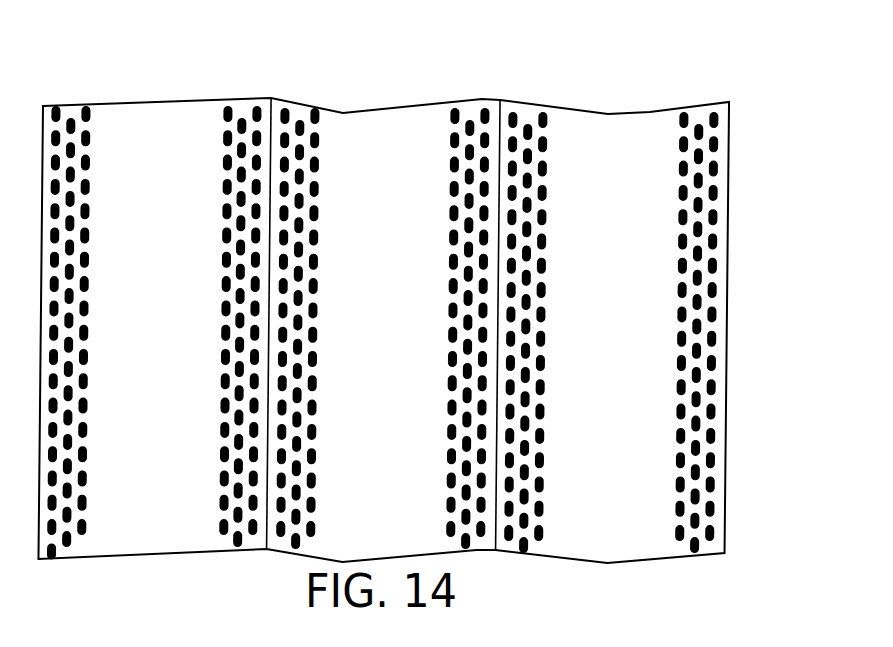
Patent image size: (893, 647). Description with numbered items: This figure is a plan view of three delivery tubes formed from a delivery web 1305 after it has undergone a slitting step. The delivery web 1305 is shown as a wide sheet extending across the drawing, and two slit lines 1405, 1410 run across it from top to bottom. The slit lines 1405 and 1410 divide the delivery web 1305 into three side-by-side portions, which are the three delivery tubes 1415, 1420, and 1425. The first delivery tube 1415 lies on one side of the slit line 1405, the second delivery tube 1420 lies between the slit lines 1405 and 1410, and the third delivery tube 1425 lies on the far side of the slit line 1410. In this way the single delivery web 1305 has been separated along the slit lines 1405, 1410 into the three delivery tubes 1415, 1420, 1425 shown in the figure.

The delivery web 1305 is at (386, 65).
The slit line 1405 is at (274, 88).
The slit line 1410 is at (503, 89).
The delivery tube 1415 is at (154, 332).
The delivery tube 1420 is at (382, 328).
The delivery tube 1425 is at (611, 332).